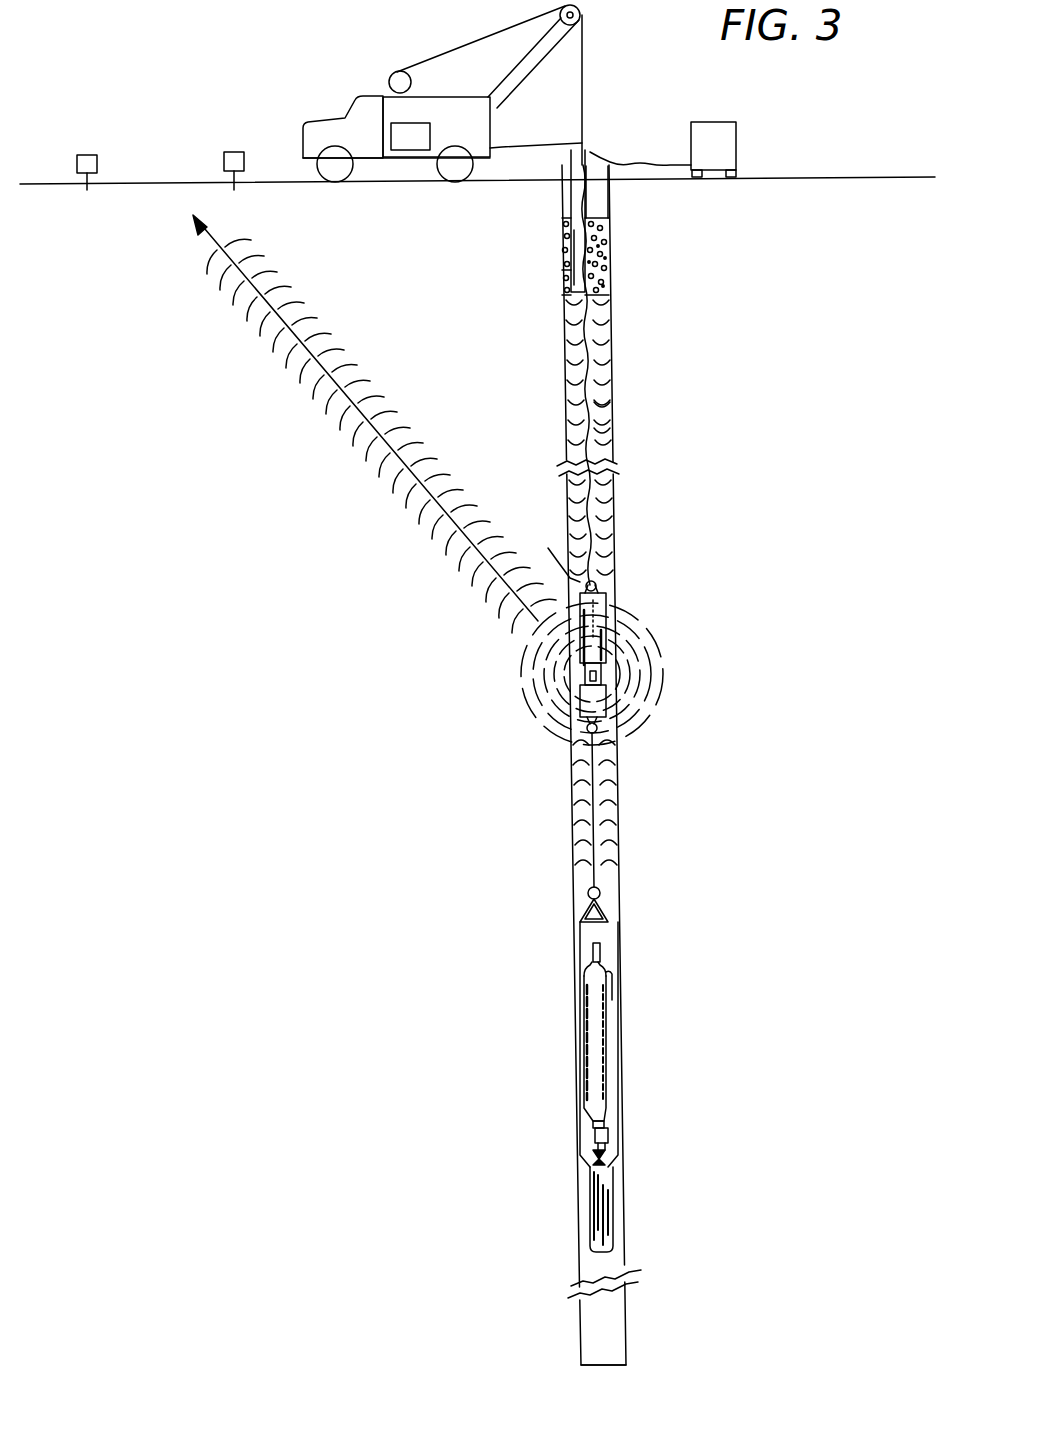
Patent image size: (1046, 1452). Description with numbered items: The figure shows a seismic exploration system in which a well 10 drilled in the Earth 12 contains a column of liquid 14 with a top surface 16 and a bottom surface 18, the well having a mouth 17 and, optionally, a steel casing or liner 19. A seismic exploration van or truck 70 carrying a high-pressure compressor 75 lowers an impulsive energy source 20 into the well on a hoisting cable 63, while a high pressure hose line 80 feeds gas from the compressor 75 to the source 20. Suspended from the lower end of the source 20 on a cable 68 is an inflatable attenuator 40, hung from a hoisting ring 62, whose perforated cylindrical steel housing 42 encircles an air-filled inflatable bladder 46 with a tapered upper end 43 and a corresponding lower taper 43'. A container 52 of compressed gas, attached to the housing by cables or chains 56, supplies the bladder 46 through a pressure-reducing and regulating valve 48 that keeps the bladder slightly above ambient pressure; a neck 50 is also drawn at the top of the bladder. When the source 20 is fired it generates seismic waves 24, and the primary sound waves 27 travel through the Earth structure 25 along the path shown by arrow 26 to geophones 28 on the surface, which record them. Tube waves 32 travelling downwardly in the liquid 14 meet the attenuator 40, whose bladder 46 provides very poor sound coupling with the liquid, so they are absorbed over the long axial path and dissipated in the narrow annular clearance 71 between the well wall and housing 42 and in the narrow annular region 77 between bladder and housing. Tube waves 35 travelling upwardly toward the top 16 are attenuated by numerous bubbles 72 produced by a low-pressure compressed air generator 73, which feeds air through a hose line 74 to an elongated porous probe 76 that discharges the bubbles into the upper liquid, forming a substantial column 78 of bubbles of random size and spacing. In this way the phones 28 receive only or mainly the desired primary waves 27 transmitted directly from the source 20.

The well 10 is at (560, 346).
The Earth 12 is at (836, 178).
The column of liquid 14 is at (580, 401).
The top surface 16 is at (593, 219).
The mouth 17 is at (571, 156).
The bottom surface 18 is at (604, 1365).
The casing or liner of steel 19 is at (608, 372).
The impulsive energy source 20 is at (602, 616).
The seismic waves 24 is at (550, 680).
The Earth structure 25 is at (224, 729).
The path arrow 26 is at (206, 282).
The primary sound waves 27 is at (294, 288).
The geophones 28 is at (92, 154).
The tube waves 32 is at (612, 858).
The tube waves 35 is at (606, 434).
The inflatable attenuator 40 is at (615, 1075).
The cylindrical steel housing 42 is at (618, 950).
The tapered upper end 43 is at (655, 978).
The lower taper of bladder wall 43' is at (672, 1103).
The inflatable bladder 46 is at (604, 1010).
The pressure-reducing and regulating valve 48 is at (608, 1136).
The neck 50 is at (592, 952).
The container 52 is at (610, 1209).
The cables or chains 56 is at (616, 1156).
The hoisting ring 62 is at (598, 587).
The hoisting cable 63 is at (588, 72).
The cable 68 is at (596, 832).
The seismic exploration van or truck 70 is at (322, 98).
The narrow annular clearance 71 is at (584, 1040).
The bubbles 72 is at (604, 275).
The low-pressure compressed air generator 73 is at (736, 132).
The hose line 74 is at (661, 166).
The high-pressure compressor 75 is at (432, 130).
The elongated porous probe 76 is at (574, 250).
The narrow annular region 77 is at (590, 1070).
The column of bubbles 78 is at (572, 270).
The high pressure hose line 80 is at (549, 142).